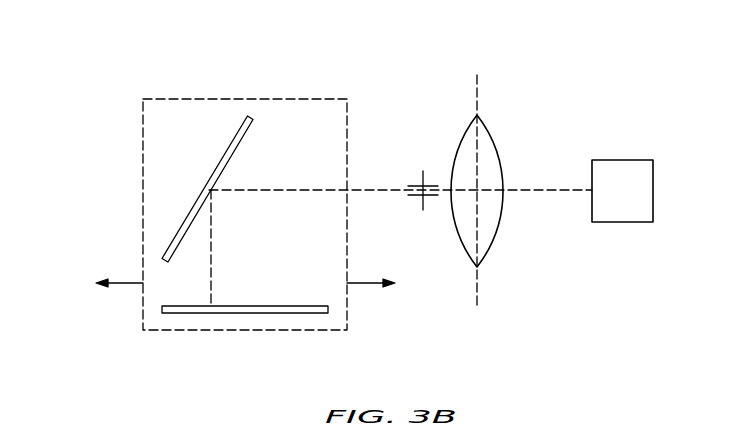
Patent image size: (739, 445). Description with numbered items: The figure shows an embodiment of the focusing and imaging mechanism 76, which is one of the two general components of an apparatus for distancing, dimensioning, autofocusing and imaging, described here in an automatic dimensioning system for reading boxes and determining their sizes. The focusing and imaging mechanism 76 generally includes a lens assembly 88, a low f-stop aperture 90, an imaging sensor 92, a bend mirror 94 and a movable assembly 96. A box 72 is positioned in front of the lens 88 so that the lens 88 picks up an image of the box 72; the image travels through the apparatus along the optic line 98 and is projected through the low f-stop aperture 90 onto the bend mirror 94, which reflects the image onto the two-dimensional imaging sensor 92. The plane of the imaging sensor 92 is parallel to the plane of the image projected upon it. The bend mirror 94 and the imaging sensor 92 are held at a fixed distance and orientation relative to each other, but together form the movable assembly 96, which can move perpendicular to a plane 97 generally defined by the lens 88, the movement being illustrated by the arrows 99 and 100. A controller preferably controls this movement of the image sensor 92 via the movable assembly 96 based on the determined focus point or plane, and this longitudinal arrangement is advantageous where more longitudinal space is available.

The box 72 is at (620, 160).
The focusing and imaging mechanism 76 is at (335, 59).
The lens assembly 88 is at (494, 142).
The low f-stop aperture 90 is at (423, 171).
The imaging sensor 92 is at (300, 313).
The bend mirror 94 is at (215, 166).
The movable assembly 96 is at (143, 314).
The plane 97 is at (478, 195).
The optic line 98 is at (550, 190).
The arrow 99 is at (386, 283).
The arrow 100 is at (100, 283).